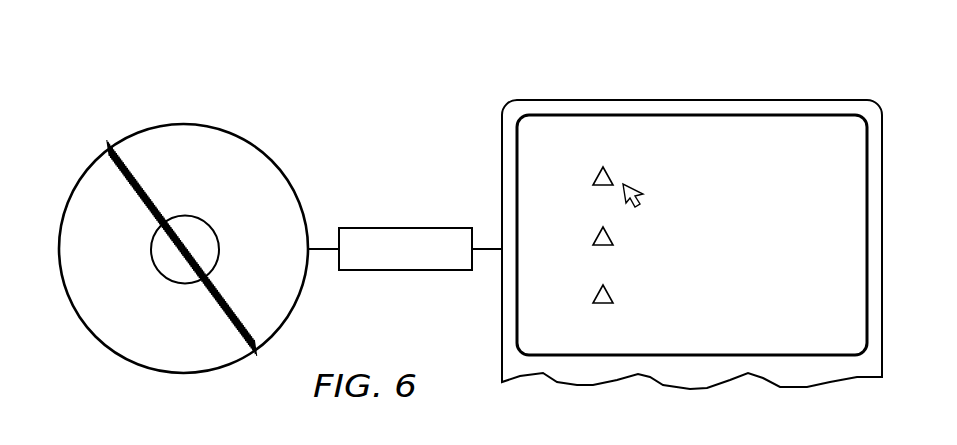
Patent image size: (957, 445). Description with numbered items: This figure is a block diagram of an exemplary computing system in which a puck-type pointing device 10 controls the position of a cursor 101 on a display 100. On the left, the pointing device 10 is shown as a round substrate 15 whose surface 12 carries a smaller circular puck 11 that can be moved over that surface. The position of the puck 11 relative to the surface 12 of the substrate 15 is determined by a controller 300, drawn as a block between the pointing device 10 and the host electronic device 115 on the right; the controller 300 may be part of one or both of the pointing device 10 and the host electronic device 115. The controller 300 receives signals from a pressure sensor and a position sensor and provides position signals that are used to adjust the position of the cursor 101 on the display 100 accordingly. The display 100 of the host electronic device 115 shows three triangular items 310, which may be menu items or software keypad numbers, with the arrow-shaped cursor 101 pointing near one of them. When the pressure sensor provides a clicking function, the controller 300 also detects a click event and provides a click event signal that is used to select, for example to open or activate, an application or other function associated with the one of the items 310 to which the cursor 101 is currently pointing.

The pointing device 10 is at (181, 214).
The puck 11 is at (205, 218).
The surface 12 is at (97, 193).
The substrate 15 is at (96, 350).
The controller 300 is at (405, 228).
The host electronic device 115 is at (682, 212).
The display 100 is at (757, 137).
The items 310 is at (597, 178).
The cursor 101 is at (643, 196).